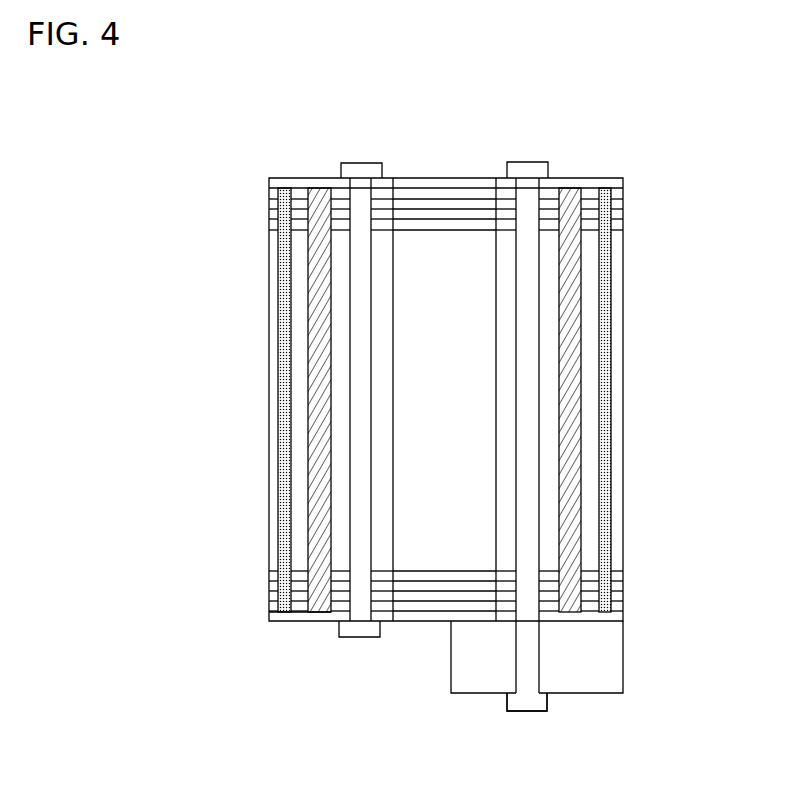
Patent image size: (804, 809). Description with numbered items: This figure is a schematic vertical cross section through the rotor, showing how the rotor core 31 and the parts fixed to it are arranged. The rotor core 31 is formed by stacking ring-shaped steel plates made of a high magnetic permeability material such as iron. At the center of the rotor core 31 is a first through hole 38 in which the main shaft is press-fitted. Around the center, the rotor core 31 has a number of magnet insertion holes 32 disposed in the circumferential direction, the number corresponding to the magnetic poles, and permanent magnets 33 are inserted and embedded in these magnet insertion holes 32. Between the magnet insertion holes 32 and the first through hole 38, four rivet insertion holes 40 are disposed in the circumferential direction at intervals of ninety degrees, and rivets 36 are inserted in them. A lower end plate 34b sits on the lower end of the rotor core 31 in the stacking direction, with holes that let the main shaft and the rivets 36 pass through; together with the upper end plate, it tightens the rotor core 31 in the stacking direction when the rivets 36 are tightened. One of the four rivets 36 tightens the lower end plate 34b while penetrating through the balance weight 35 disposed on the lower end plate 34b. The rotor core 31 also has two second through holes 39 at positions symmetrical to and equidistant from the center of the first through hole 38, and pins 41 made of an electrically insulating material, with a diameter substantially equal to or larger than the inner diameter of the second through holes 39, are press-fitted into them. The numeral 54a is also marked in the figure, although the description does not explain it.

The rotor core 31 is at (297, 606).
The magnet insertion holes 32 is at (288, 207).
The permanent magnets 33 is at (298, 207).
The lower end plate 34b is at (332, 618).
The balance weight 35 is at (481, 683).
The rivets 36 is at (365, 168).
The first through hole 38 is at (428, 558).
The second through holes 39 is at (584, 272).
The rivet insertion holes 40 is at (374, 255).
The pins 41 is at (325, 203).
The electrolyte layer 54a is at (447, 183).